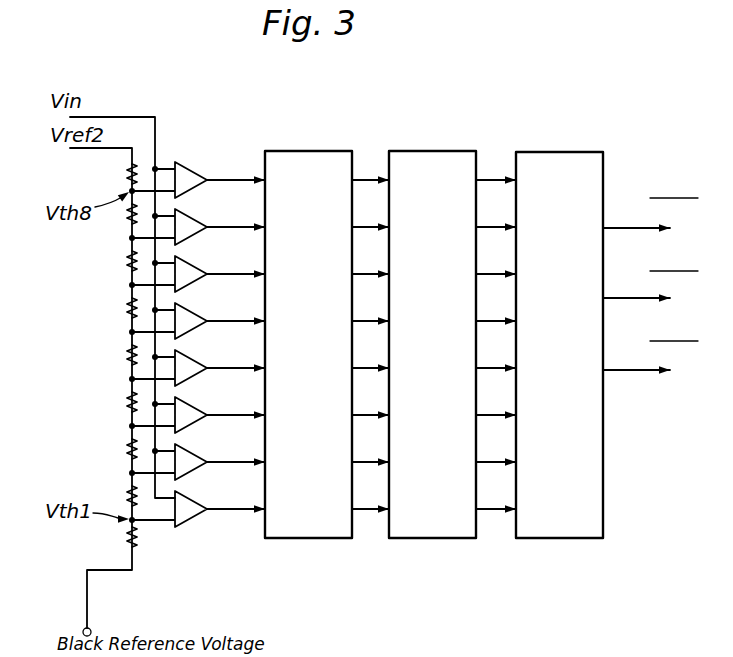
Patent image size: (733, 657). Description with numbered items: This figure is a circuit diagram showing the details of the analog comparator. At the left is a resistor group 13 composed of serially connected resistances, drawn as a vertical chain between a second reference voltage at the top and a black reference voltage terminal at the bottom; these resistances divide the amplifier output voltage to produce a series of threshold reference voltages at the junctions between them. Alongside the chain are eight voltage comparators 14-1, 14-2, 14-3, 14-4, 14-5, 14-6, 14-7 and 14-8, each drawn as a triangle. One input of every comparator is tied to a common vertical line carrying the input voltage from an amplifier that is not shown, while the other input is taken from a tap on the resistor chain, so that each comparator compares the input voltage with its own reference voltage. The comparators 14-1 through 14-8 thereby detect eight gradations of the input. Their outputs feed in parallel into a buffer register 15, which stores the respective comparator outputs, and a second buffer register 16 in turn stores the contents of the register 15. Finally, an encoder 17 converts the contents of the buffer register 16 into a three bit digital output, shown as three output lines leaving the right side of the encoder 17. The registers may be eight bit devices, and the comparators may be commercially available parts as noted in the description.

The resistor group 13 is at (112, 287).
The voltage comparator 14-1 is at (199, 504).
The voltage comparator 14-2 is at (199, 457).
The voltage comparator 14-3 is at (199, 410).
The voltage comparator 14-4 is at (199, 363).
The voltage comparator 14-5 is at (199, 316).
The voltage comparator 14-6 is at (199, 269).
The voltage comparator 14-7 is at (199, 222).
The voltage comparator 14-8 is at (193, 168).
The buffer register 15 is at (302, 151).
The buffer register 16 is at (425, 151).
The encoder 17 is at (550, 155).